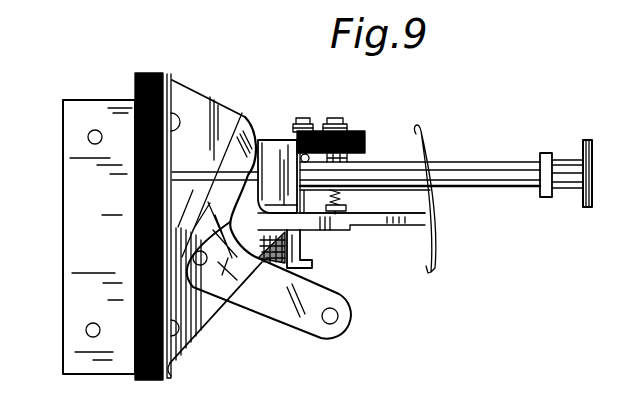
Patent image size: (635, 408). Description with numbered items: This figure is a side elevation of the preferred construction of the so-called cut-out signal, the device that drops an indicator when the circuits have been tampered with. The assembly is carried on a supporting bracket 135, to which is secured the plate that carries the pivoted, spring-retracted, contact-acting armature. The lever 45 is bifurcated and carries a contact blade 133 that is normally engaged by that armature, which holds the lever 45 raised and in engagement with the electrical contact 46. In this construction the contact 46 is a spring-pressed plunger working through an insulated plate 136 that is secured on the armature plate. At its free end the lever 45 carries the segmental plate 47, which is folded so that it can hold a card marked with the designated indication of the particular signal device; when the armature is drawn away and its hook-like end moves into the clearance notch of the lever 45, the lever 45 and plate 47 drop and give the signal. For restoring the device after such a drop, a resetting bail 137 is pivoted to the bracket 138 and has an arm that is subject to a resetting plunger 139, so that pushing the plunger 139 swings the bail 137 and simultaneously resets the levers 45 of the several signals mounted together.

The supporting bracket 135 is at (99, 237).
The insulated plate 136 is at (365, 133).
The resetting plunger 139 is at (470, 172).
The electrical contact 46 is at (345, 210).
The segmental plate 47 is at (432, 203).
The contact blade 133 is at (341, 238).
The lever 45 is at (390, 231).
The bracket 138 is at (205, 262).
The resetting bail 137 is at (340, 323).